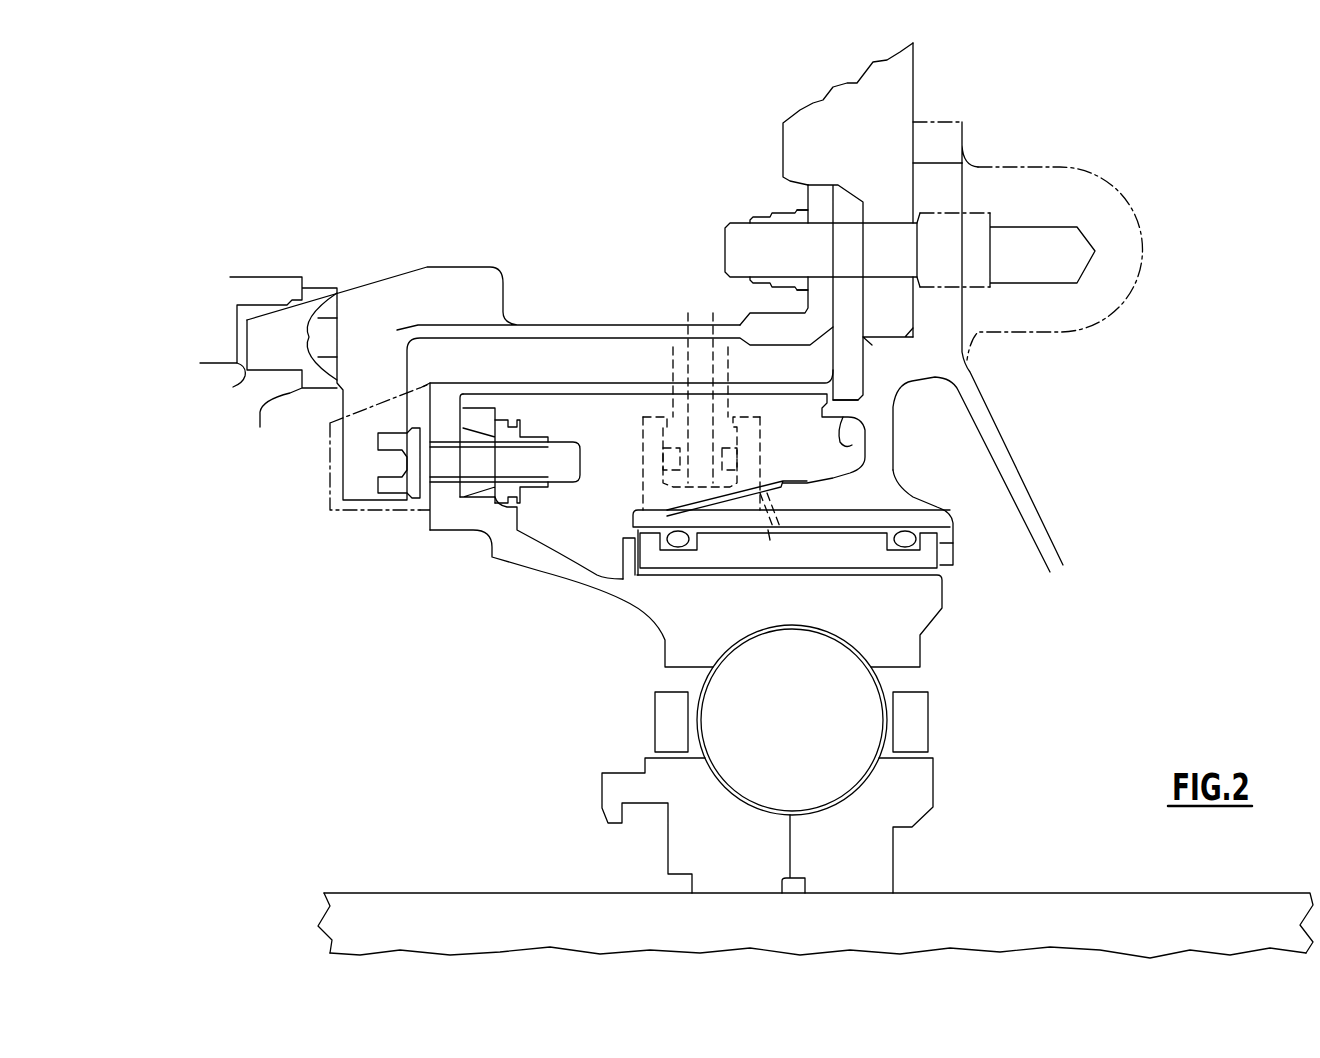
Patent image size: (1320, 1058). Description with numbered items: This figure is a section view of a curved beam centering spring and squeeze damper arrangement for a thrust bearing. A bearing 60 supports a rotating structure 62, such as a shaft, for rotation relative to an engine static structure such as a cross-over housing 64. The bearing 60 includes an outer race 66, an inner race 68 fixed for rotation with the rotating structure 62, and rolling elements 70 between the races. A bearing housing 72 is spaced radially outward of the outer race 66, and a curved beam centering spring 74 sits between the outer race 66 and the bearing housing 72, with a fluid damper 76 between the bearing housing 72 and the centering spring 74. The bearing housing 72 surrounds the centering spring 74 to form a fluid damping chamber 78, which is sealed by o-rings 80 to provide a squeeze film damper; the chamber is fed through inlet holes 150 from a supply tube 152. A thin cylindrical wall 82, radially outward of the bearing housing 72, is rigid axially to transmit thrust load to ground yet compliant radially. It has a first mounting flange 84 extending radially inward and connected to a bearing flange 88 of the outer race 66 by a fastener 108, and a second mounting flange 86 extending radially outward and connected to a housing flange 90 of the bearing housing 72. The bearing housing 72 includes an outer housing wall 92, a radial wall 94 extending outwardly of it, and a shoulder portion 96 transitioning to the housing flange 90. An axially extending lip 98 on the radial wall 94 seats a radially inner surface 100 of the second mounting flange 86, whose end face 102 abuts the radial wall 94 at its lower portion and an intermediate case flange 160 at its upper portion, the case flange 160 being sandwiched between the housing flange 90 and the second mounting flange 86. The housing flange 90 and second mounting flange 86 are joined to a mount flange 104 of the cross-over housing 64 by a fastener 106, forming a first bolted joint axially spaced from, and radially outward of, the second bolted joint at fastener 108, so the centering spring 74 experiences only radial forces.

The bearing 60 is at (1030, 708).
The rotating structure 62 is at (1071, 910).
The cross-over housing 64 is at (555, 322).
The outer race 66 is at (908, 651).
The inner race 68 is at (884, 870).
The rolling elements 70 is at (813, 731).
The bearing housing 72 is at (895, 485).
The curved beam centering spring 74 is at (765, 555).
The fluid damper 76 is at (767, 540).
The fluid damping chamber 78 is at (872, 530).
The o-rings 80 is at (673, 553).
The cylindrical wall 82 is at (633, 387).
The first mounting flange 84 is at (443, 497).
The second mounting flange 86 is at (845, 210).
The bearing flange 88 is at (482, 420).
The housing flange 90 is at (947, 193).
The outer housing wall 92 is at (822, 503).
The radial wall 94 is at (883, 438).
The shoulder portion 96 is at (897, 333).
The axially extending lip 98 is at (847, 447).
The radially inner surface 100 is at (837, 400).
The end face 102 is at (828, 368).
The mount flange 104 is at (815, 193).
The fastener 106 is at (742, 245).
The fastener 108 is at (558, 453).
The inlet holes 150 is at (757, 510).
The supply tube 152 is at (668, 363).
The intermediate case flange 160 is at (900, 188).